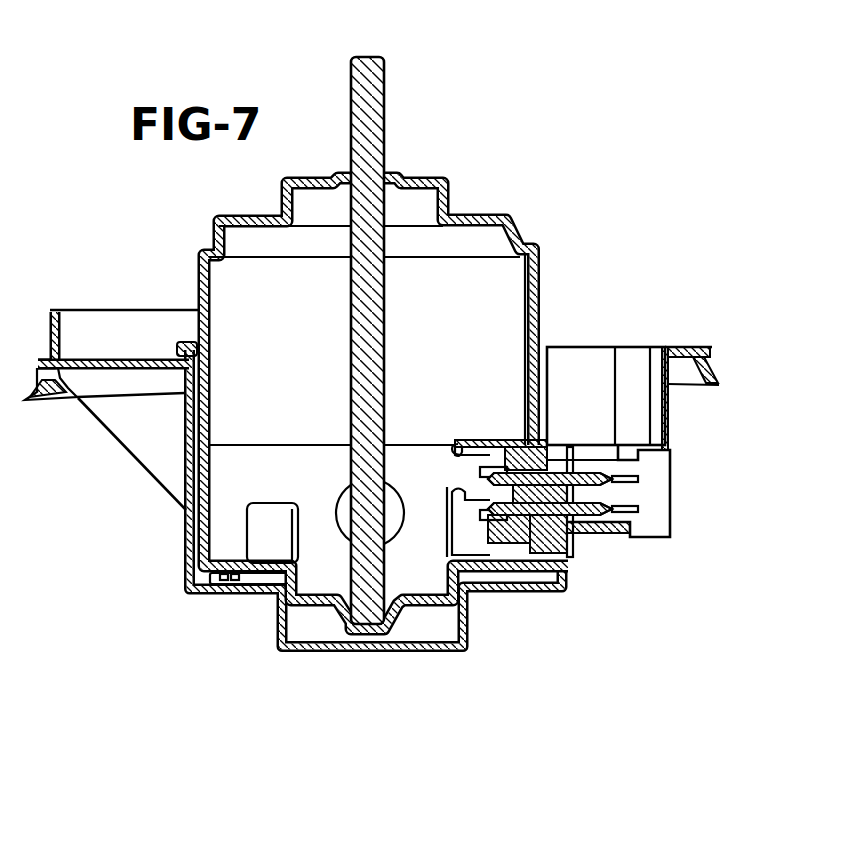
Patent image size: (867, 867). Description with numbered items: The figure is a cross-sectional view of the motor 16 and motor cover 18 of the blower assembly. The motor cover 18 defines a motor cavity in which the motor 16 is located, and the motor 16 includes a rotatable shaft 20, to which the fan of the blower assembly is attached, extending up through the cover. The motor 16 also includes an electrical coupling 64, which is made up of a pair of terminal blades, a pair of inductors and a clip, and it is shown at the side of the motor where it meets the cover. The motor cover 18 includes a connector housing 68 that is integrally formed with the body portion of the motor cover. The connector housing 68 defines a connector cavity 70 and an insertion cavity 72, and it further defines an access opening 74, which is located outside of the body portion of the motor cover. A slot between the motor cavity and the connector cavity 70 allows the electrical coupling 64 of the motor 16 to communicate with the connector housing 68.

The motor 16 is at (312, 600).
The motor cover 18 is at (180, 534).
The rotatable shaft 20 is at (384, 93).
The electrical coupling 64 is at (497, 433).
The connector housing 68 is at (690, 441).
The connector cavity 70 is at (655, 466).
The insertion cavity 72 is at (597, 372).
The access opening 74 is at (660, 530).